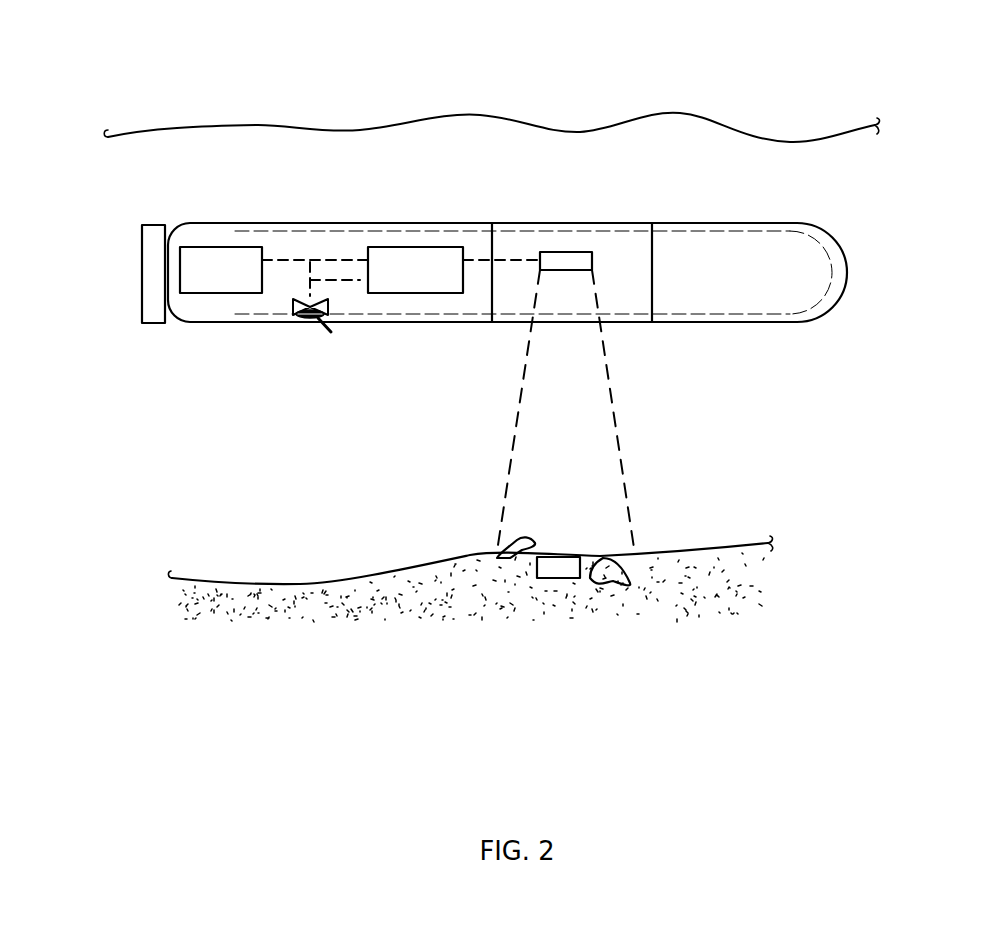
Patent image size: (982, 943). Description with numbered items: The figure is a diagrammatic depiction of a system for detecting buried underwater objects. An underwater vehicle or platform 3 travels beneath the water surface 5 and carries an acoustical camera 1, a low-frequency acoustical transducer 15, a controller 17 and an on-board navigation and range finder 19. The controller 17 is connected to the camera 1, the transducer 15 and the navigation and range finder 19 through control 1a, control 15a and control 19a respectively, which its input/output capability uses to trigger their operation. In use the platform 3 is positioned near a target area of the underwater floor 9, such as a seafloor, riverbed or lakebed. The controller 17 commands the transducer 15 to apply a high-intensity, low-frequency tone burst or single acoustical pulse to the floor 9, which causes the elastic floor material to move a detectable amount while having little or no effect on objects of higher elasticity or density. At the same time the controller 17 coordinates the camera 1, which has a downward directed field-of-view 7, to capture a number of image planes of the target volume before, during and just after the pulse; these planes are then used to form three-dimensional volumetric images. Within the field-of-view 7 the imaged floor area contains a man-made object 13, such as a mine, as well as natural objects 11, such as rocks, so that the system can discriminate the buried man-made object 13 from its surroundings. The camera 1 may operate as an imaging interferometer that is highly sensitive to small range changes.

The acoustical camera 1 is at (562, 252).
The control 1a is at (513, 259).
The underwater platform 3 is at (838, 254).
The water surface 5 is at (257, 125).
The field-of-view 7 is at (615, 425).
The underwater floor 9 is at (318, 581).
The natural objects 11 is at (520, 557).
The man-made object 13 is at (565, 556).
The low-frequency acoustical transducer 15 is at (310, 322).
The control 15a is at (340, 280).
The controller 17 is at (398, 247).
The on-board navigation and range finder 19 is at (218, 293).
The control 19a is at (312, 260).